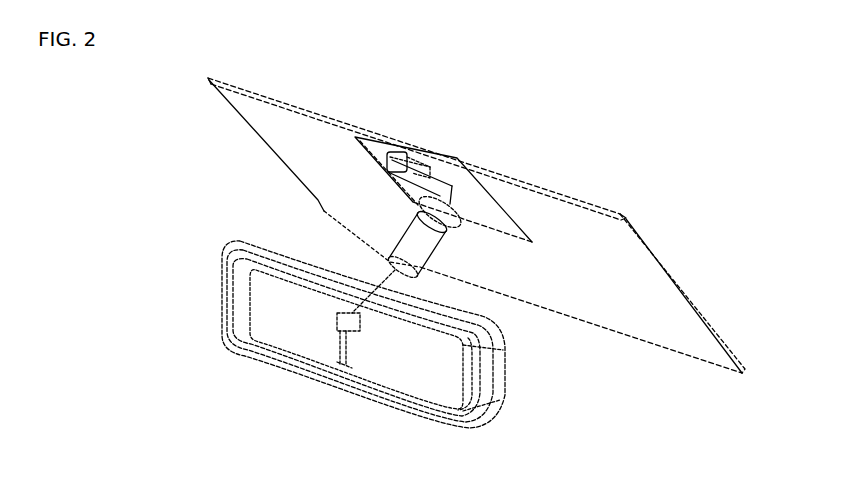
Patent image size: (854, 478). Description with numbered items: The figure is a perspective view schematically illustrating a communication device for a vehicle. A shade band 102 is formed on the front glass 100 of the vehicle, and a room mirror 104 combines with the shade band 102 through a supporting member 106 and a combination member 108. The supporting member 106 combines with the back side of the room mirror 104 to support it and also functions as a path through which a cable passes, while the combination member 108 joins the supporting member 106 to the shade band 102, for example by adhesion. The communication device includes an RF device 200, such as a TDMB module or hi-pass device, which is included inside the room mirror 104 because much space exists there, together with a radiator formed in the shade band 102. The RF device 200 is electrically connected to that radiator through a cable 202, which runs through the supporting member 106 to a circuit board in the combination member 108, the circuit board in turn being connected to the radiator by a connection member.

The front glass 100 is at (640, 257).
The shade band 102 is at (452, 160).
The room mirror 104 is at (503, 343).
The supporting member 106 is at (433, 249).
The combination member 108 is at (390, 150).
The RF device 200 is at (292, 352).
The cable 202 is at (362, 366).